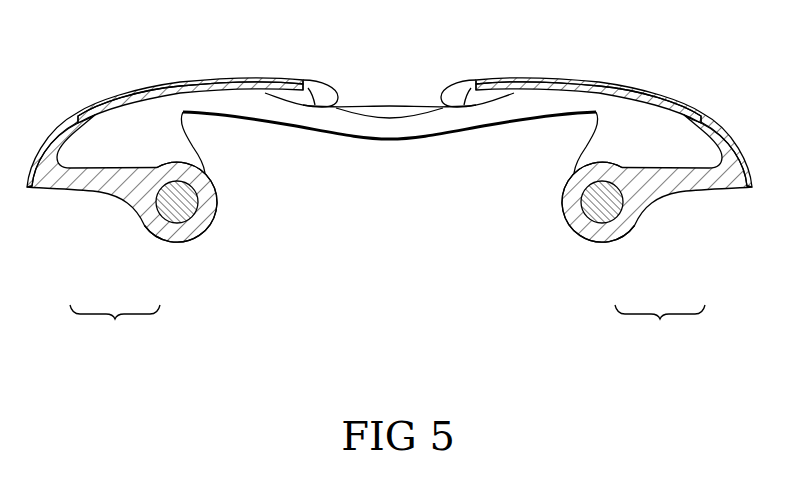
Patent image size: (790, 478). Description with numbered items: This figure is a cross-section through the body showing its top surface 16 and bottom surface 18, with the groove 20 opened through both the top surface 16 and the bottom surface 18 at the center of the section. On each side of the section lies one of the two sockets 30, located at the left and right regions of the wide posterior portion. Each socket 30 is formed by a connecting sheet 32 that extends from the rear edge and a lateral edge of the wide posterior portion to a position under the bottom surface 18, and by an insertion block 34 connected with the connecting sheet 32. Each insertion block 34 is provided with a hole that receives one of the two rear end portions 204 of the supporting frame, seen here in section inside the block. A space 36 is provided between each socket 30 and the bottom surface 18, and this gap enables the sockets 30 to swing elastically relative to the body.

The top surface 16 is at (327, 84).
The bottom surface 18 is at (246, 95).
The groove 20 is at (390, 100).
The socket 30 is at (387, 329).
The connecting sheet 32 is at (82, 180).
The insertion block 34 is at (163, 230).
The space 36 is at (133, 148).
The rear end portion 204 is at (173, 210).